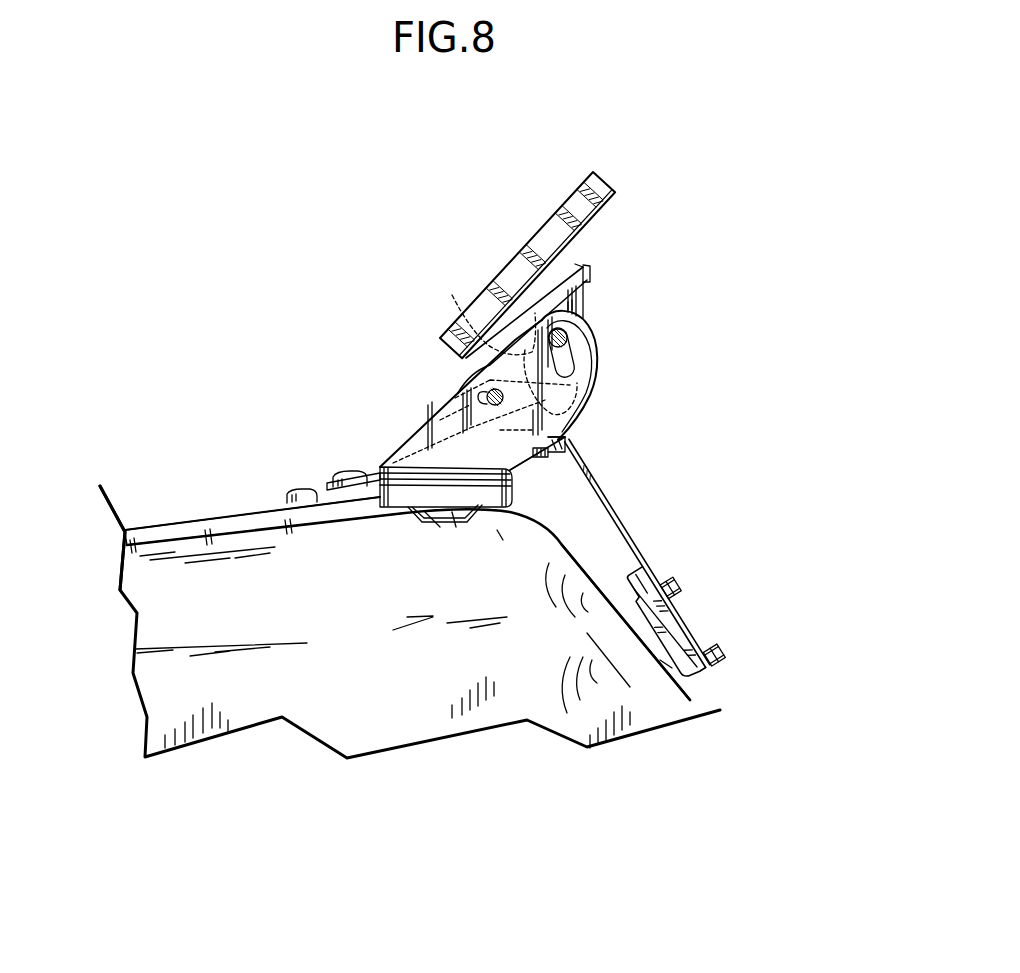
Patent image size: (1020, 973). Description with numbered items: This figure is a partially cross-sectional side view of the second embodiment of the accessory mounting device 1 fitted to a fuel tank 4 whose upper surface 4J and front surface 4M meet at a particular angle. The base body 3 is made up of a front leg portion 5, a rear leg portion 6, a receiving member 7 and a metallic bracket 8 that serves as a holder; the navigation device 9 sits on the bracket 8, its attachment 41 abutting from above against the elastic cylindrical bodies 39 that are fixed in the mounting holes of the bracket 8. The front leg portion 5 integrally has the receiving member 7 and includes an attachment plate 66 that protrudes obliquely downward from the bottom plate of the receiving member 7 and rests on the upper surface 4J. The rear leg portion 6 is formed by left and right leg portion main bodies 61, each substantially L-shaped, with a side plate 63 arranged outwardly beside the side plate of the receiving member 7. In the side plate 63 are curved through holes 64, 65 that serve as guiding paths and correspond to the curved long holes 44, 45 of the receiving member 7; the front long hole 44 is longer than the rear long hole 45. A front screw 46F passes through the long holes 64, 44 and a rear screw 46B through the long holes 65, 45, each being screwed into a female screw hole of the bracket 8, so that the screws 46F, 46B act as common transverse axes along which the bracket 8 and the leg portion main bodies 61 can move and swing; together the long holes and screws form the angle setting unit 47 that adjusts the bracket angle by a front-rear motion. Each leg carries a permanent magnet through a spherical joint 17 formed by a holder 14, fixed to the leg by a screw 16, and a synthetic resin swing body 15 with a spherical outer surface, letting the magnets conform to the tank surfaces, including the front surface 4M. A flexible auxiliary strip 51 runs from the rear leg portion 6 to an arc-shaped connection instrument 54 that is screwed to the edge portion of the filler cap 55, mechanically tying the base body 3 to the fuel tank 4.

The solar panel drive apparatus 1 is at (576, 488).
The base body 3 is at (548, 363).
The fuel tank 4 is at (218, 715).
The upper surface 4J is at (140, 527).
The front surface 4M is at (687, 700).
The front leg portion 5 is at (624, 669).
The rear leg portion 6 is at (418, 527).
The receiving member 7 is at (452, 295).
The bracket 8 is at (588, 297).
The navigation device 9 is at (560, 254).
The holder 14 is at (705, 675).
The swing body 15 is at (447, 513).
The screw 16 is at (723, 653).
The spherical joint 17 is at (455, 513).
The elastic cylindrical body 39 is at (580, 262).
The attachment 41 is at (613, 193).
The front long hole 44 is at (594, 395).
The rear long hole 45 is at (453, 390).
The rear screw 46B is at (578, 437).
The front screw 46F is at (568, 340).
The angle setting unit 47 is at (566, 440).
The auxiliary strip 51 is at (380, 472).
The connection instrument 54 is at (320, 488).
The filler cap 55 is at (205, 520).
The leg portion main body 61 is at (493, 460).
The side plate 63 is at (623, 367).
The through hole 64 is at (577, 367).
The through hole 65 is at (482, 397).
The attachment plate 66 is at (633, 540).